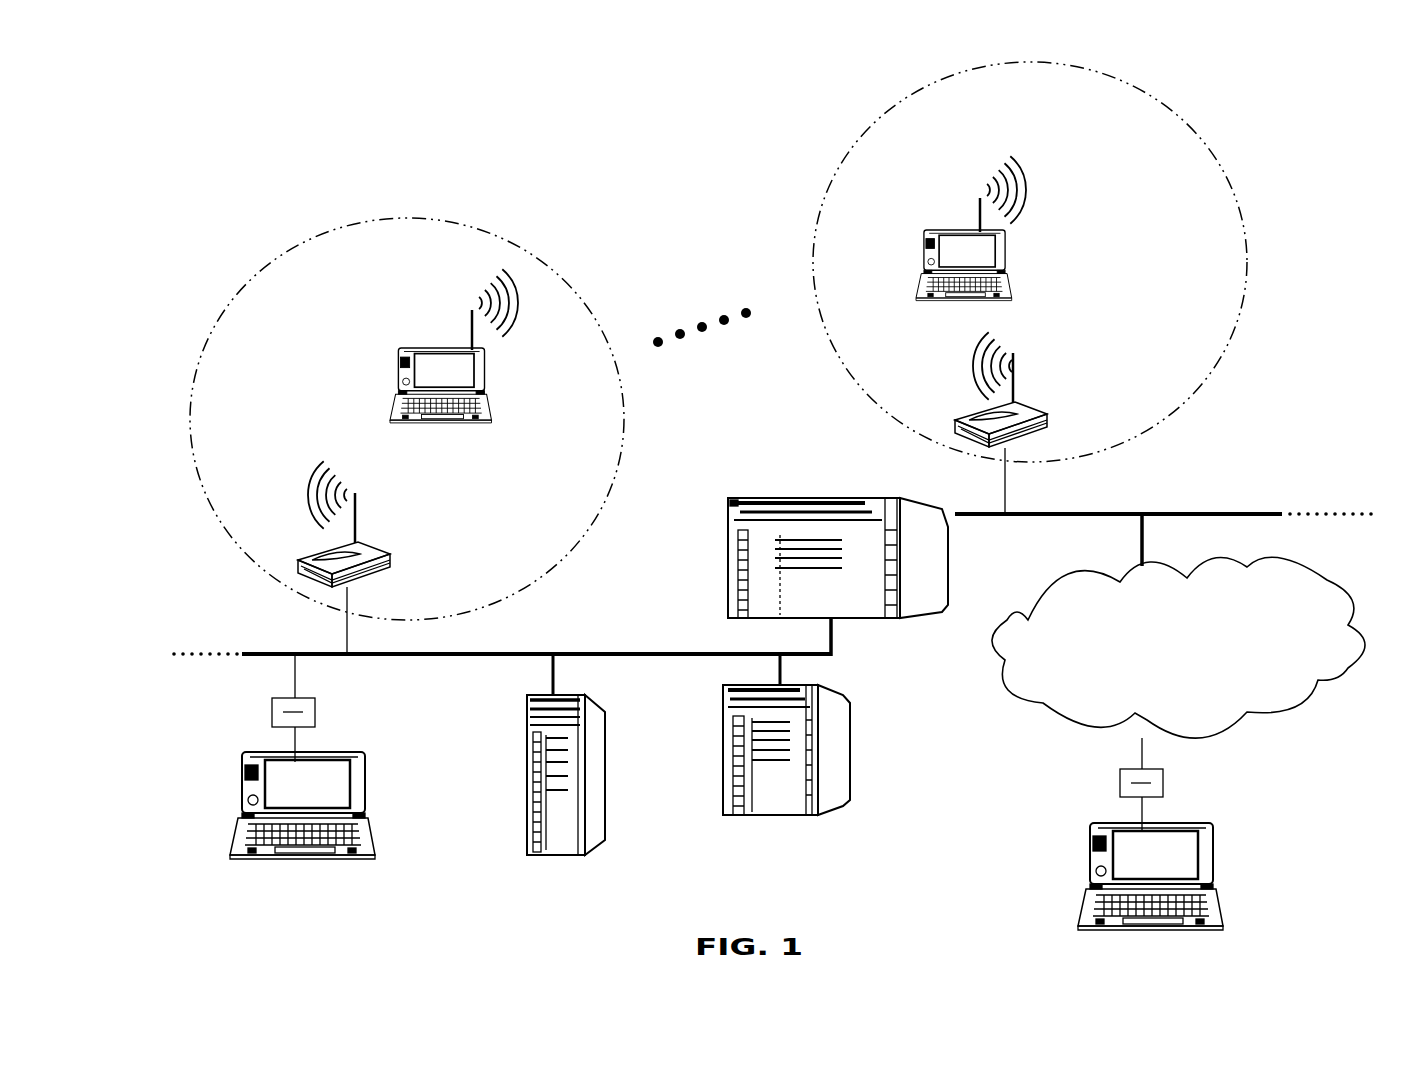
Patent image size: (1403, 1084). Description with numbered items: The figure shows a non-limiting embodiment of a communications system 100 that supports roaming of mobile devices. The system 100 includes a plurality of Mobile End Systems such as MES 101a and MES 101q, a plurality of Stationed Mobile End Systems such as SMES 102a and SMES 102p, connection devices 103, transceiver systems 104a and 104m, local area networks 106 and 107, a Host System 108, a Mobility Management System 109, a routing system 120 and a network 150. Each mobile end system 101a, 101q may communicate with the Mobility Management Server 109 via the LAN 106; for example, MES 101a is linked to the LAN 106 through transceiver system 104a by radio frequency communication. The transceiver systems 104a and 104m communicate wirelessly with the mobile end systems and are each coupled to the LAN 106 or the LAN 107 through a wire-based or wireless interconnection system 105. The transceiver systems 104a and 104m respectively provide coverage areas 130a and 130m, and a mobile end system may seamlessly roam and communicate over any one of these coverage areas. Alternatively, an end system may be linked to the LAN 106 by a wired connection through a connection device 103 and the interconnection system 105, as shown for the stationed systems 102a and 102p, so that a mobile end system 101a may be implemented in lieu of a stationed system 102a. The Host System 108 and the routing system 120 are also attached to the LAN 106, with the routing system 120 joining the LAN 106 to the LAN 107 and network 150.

The communications system 100 is at (691, 108).
The coverage area 130a is at (452, 222).
The coverage area 130m is at (867, 130).
The mobile end system 101a is at (398, 393).
The mobile end system 101q is at (1003, 252).
The transceiver system 104a is at (363, 552).
The transceiver system 104m is at (1020, 413).
The interconnection system 105 is at (343, 610).
The local area network 106 is at (402, 658).
The local area network 107 is at (1235, 512).
The routing system 120 is at (728, 498).
The host system 108 is at (523, 823).
The mobility management system 109 is at (830, 742).
The connection device 103 is at (277, 717).
The stationed mobile end system 102a is at (227, 820).
The stationed mobile end system 102p is at (1075, 888).
The network 150 is at (1178, 626).